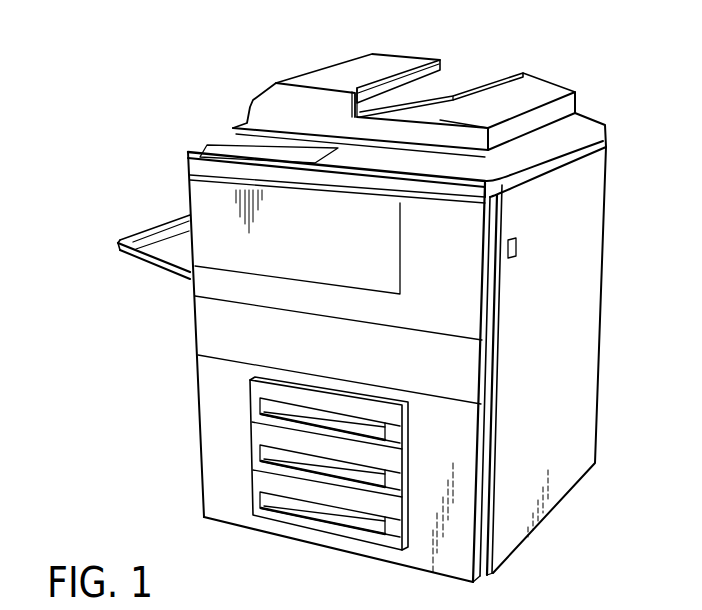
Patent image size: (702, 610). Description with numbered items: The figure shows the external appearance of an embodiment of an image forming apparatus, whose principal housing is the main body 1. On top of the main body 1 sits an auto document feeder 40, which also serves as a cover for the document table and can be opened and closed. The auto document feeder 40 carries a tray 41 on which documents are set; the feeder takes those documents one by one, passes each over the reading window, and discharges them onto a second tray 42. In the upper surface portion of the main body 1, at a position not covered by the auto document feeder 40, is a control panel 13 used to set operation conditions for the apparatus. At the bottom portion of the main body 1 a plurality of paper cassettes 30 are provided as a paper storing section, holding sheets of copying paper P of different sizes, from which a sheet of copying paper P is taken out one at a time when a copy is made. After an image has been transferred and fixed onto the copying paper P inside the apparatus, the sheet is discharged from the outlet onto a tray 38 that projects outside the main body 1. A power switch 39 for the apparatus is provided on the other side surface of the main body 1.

The main body 1 is at (611, 179).
The control panel 13 is at (225, 148).
The paper cassettes 30 is at (257, 403).
The tray 38 is at (172, 277).
The power switch 39 is at (518, 240).
The auto document feeder 40 is at (413, 62).
The tray 41 is at (490, 75).
The tray 42 is at (538, 90).
The copying paper P is at (162, 245).